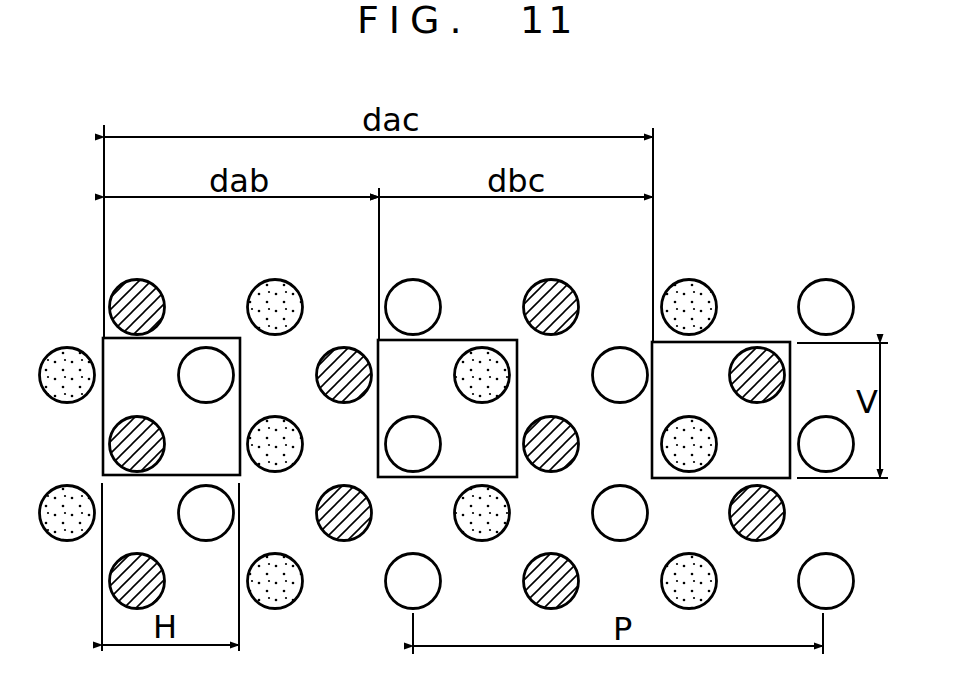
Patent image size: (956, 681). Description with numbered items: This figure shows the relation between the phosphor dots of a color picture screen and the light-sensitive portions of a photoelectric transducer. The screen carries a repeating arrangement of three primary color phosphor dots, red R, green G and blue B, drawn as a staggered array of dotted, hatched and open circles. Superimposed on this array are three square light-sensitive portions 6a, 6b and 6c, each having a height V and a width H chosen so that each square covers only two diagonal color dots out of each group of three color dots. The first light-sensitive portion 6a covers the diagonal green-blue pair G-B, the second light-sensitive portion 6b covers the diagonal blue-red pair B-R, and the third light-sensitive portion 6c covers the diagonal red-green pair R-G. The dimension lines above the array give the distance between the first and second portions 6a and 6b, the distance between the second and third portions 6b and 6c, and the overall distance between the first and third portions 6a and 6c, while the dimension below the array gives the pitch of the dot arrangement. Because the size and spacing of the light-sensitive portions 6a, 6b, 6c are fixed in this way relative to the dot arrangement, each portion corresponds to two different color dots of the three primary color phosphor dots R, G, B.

The light-sensitive portion 6a is at (173, 338).
The light-sensitive portion 6b is at (447, 340).
The light-sensitive portion 6c is at (725, 342).
The green phosphor dot G is at (139, 279).
The red phosphor dot R is at (279, 279).
The blue phosphor dot B is at (417, 279).
The green-blue dot pair G-B is at (120, 399).
The blue-red dot pair B-R is at (502, 340).
The red-green dot pair R-G is at (777, 342).